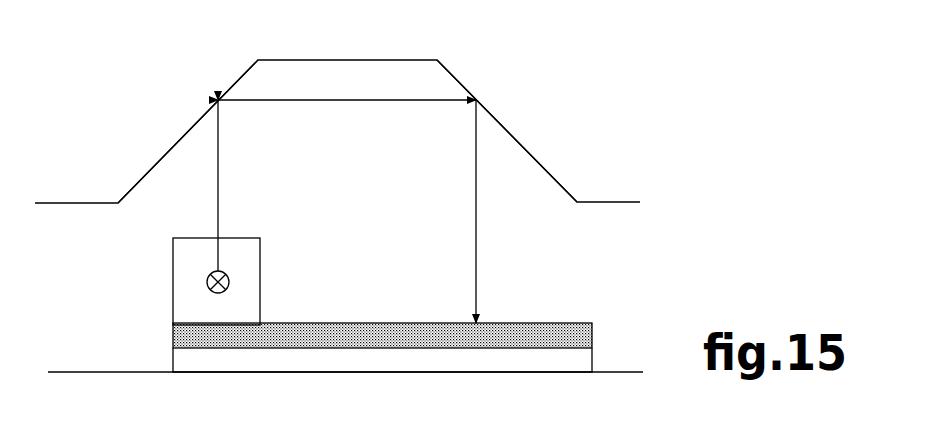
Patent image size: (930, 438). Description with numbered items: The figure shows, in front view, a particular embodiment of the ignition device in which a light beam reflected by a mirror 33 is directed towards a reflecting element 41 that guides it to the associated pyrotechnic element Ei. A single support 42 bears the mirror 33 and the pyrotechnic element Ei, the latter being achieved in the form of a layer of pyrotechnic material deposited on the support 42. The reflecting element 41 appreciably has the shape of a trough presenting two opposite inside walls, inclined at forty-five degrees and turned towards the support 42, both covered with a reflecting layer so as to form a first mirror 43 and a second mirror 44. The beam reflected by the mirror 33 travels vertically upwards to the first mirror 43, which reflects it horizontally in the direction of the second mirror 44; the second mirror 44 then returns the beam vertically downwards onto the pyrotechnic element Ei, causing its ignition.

The reflecting element 41 is at (352, 59).
The first mirror 43 is at (157, 165).
The second mirror 44 is at (527, 152).
The mirror 33 is at (206, 262).
The pyrotechnic element Ei is at (551, 333).
The support 42 is at (565, 360).